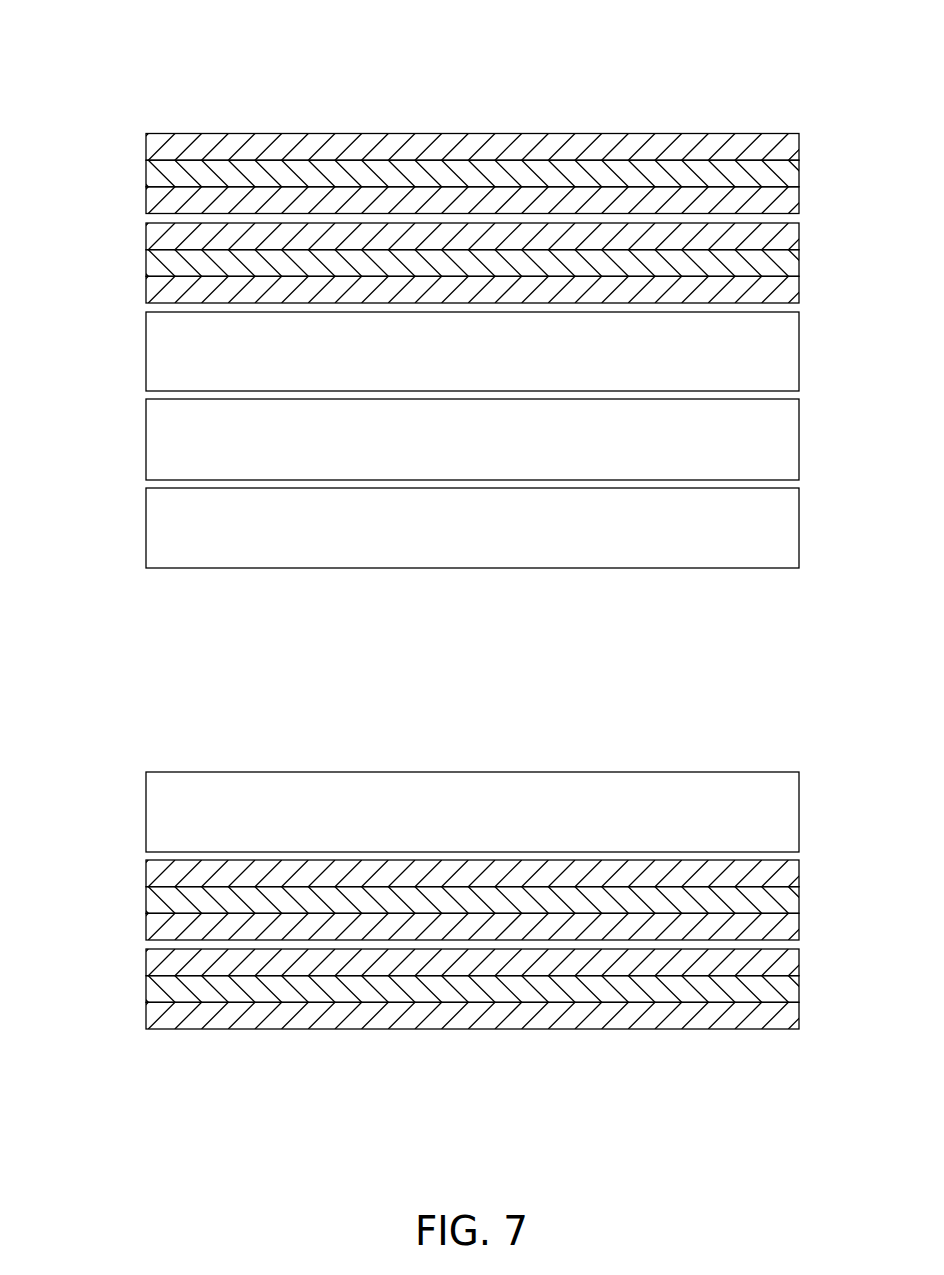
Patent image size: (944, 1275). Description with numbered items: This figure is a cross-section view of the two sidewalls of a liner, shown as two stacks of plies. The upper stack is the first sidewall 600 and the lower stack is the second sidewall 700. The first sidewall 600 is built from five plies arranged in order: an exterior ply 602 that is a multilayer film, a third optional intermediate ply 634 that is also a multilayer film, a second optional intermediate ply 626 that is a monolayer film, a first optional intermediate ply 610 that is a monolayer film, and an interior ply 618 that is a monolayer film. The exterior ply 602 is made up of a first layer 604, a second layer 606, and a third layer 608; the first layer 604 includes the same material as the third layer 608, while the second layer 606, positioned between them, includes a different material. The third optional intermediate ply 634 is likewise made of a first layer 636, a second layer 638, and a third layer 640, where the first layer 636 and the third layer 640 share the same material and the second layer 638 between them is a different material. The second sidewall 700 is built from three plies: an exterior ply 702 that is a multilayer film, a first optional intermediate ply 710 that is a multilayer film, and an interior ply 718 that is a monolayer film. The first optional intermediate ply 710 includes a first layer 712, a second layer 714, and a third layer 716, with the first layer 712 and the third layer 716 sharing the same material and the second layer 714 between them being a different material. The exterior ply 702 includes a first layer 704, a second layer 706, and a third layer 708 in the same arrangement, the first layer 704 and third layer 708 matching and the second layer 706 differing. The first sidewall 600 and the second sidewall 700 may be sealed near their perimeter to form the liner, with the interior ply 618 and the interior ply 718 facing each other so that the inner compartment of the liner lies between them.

The first sidewall 600 is at (538, 84).
The exterior ply 602 is at (462, 171).
The first layer 604 is at (787, 151).
The second layer 606 is at (787, 177).
The third layer 608 is at (787, 203).
The third optional intermediate ply 634 is at (462, 259).
The first layer 636 is at (787, 239).
The second layer 638 is at (787, 266).
The third layer 640 is at (787, 292).
The second optional intermediate ply 626 is at (133, 312).
The first optional intermediate ply 610 is at (133, 399).
The interior ply 618 is at (133, 488).
The second sidewall 700 is at (539, 721).
The interior ply 718 is at (133, 772).
The first optional intermediate ply 710 is at (462, 897).
The first layer 712 is at (787, 876).
The second layer 714 is at (787, 903).
The third layer 716 is at (787, 929).
The exterior ply 702 is at (462, 985).
The first layer 704 is at (787, 965).
The second layer 706 is at (787, 992).
The third layer 708 is at (787, 1018).